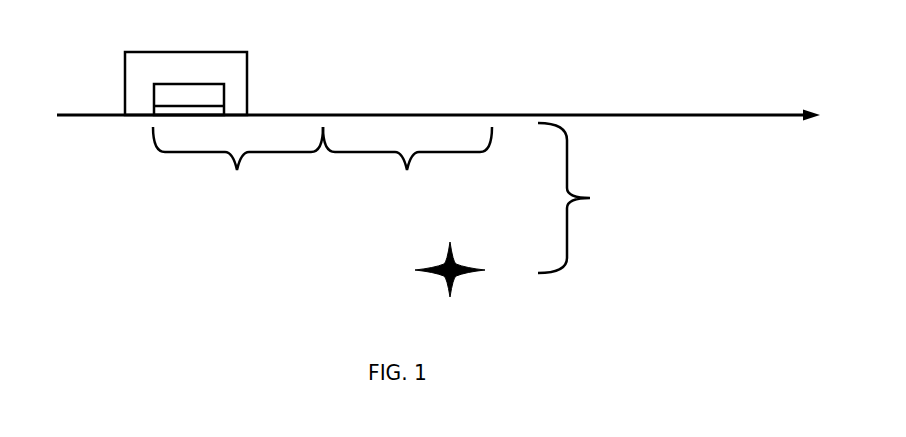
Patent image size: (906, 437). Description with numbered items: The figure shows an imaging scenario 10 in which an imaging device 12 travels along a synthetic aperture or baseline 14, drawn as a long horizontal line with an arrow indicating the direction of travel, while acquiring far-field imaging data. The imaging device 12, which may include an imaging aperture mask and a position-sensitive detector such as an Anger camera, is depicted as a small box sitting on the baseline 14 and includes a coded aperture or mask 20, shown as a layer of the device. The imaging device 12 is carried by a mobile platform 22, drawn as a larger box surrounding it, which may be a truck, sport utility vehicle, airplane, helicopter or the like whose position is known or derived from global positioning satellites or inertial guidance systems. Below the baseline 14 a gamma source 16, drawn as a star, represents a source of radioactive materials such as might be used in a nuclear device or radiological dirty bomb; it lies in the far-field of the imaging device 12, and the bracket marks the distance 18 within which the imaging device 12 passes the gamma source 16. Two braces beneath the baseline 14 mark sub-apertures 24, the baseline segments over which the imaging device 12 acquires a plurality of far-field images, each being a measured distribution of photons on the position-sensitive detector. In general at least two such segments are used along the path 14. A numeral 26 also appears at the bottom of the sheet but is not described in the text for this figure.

The imaging scenario 10 is at (519, 33).
The imaging device 12 is at (205, 83).
The synthetic aperture or baseline 14 is at (662, 113).
The gamma source 16 is at (438, 278).
The distance 18 is at (586, 198).
The coded aperture or mask 20 is at (160, 108).
The mobile platform 22 is at (240, 77).
The sub-apertures 24 is at (322, 169).
The element 26 is at (715, 425).